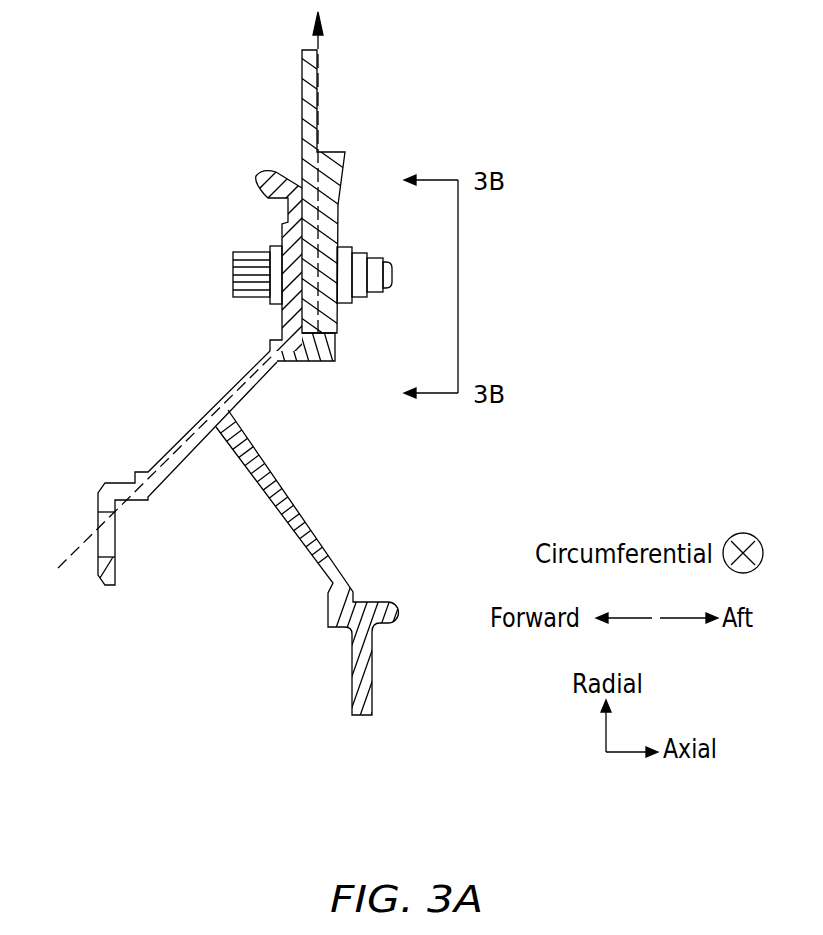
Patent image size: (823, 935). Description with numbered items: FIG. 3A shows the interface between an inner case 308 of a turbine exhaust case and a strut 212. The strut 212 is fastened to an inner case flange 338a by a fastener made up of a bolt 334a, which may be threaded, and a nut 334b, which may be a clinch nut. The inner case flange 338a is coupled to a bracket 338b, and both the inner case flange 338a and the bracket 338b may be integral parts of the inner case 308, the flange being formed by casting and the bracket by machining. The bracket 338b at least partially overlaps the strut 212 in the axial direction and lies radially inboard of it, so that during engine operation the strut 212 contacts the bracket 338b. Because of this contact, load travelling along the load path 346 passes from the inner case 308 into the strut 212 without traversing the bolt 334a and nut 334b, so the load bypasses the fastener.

The strut 212 is at (343, 160).
The inner case 308 is at (218, 635).
The bolt 334a is at (233, 265).
The nut 334b is at (362, 288).
The inner case flange 338a is at (280, 223).
The bracket 338b is at (325, 363).
The load path 346 is at (58, 568).